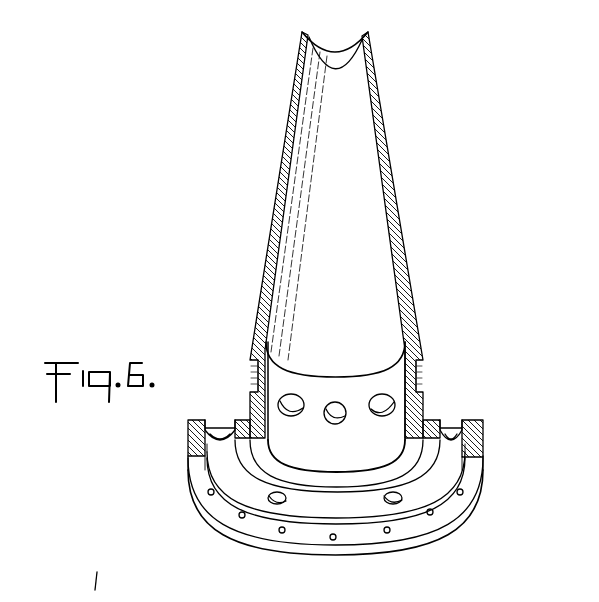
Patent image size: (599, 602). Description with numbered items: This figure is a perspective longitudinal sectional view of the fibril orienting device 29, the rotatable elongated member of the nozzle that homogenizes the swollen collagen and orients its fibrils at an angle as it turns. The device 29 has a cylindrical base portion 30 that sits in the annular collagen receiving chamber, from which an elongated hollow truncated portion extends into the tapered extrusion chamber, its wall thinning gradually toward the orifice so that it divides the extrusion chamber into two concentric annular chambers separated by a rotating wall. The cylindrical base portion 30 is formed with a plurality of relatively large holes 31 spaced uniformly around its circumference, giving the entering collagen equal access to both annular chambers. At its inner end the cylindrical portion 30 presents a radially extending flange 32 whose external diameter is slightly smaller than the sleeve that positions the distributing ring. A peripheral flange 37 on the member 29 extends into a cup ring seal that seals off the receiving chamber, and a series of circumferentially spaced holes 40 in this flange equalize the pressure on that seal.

The fibril orienting device 29 is at (400, 266).
The cylindrical base portion 30 is at (250, 416).
The holes 31 is at (409, 372).
The radially extending flange 32 is at (483, 440).
The peripheral flange 37 is at (212, 507).
The circumferentially spaced holes 40 is at (328, 538).